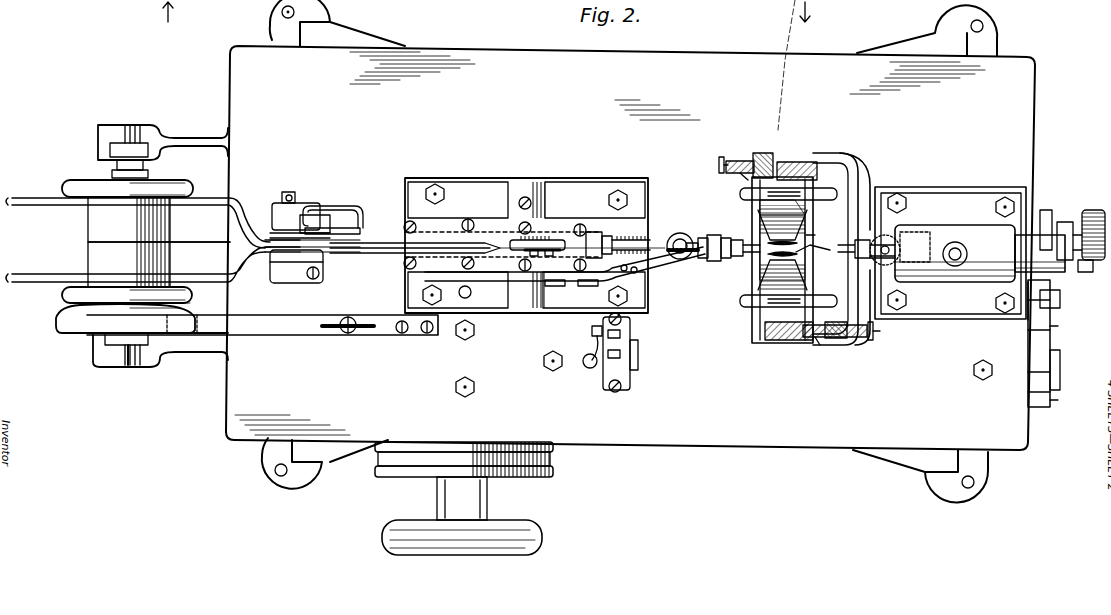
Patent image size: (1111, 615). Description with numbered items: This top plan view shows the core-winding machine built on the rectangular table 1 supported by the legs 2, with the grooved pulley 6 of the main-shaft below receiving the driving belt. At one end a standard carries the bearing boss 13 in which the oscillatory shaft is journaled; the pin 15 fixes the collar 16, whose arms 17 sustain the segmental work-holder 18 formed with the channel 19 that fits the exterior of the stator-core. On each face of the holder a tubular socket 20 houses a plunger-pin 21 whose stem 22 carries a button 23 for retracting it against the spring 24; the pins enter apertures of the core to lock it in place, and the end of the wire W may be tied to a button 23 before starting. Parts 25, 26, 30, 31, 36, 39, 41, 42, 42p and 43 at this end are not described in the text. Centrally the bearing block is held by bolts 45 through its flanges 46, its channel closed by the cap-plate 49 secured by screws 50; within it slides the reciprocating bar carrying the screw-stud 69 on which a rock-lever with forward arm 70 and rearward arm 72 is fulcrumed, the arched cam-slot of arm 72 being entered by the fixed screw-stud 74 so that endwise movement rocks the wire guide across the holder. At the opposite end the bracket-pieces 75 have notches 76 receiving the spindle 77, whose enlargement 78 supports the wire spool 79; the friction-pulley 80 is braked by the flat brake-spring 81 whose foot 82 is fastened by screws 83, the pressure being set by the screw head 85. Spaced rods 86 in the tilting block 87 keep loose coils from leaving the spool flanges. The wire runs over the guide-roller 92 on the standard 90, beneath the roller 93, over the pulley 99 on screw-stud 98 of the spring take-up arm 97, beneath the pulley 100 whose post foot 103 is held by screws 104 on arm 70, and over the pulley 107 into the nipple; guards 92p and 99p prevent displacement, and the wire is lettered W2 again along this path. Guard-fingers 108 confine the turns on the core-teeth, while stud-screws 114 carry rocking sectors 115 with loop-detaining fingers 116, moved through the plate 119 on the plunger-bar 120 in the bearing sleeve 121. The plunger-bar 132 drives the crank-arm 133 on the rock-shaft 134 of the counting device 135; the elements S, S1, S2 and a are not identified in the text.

The table 1 is at (630, 248).
The legs 2 is at (629, 251).
The grooved pulley 6 is at (553, 460).
The bearing boss 13 is at (950, 253).
The pin 15 is at (888, 236).
The collar 16 is at (888, 272).
The arms 17 is at (862, 170).
The segmental work-holder 18 is at (808, 158).
The channel 19 is at (785, 162).
The tubular socket 20 is at (740, 161).
The plunger-pin 21 is at (762, 153).
The stem 22 is at (719, 160).
The button 23 is at (718, 170).
The spring 24 is at (735, 180).
The shaft 25 is at (1040, 253).
The collar 26 is at (1065, 222).
The pin 30 is at (1082, 272).
The knob 31 is at (1103, 202).
The washer 36 is at (1046, 210).
The stud 39 is at (1060, 300).
The plate 41 is at (1028, 320).
The lever arm 42 is at (1039, 343).
The lever arm ends 42p is at (1045, 425).
The stop 43 is at (1060, 365).
The bolts 45 is at (435, 184).
The flanges 46 is at (642, 198).
The cap-plate 49 is at (448, 225).
The screws 50 is at (474, 226).
The screw-stud 69 is at (595, 267).
The forwardly extending arm 70 is at (665, 268).
The rearwardly extending arm 72 is at (488, 272).
The fixed screw-stud 74 is at (555, 291).
The bracket-pieces 75 is at (160, 246).
The notches 76 is at (158, 112).
The spindle 77 is at (128, 365).
The enlargement 78 is at (112, 172).
The spool 79 is at (186, 184).
The friction-pulley 80 is at (58, 324).
The flat brake-spring 81 is at (262, 325).
The foot 82 is at (402, 320).
The screws 83 is at (405, 334).
The head 85 is at (350, 317).
The spaced rods 86 is at (200, 207).
The tilting block 87 is at (286, 277).
The standard 90 is at (332, 228).
The grooved guide-roller 92 is at (338, 252).
The guard 92p is at (352, 208).
The guide-roller 93 is at (265, 242).
The spring take-up arm 97 is at (388, 252).
The screw-stud 98 is at (534, 256).
The grooved guide-pulley 99 is at (550, 256).
The guard 99p is at (558, 240).
The guide-pulley 100 is at (625, 240).
The foot 103 is at (630, 262).
The screws 104 is at (634, 273).
The grooved guide-pulley 107 is at (688, 255).
The guard-finger 108 is at (740, 196).
The lateral stud-screws 114 is at (714, 235).
The rocking sectors 115 is at (703, 238).
The loop-detaining fingers 116 is at (740, 240).
The plate 119 is at (676, 240).
The plunger-bar 120 is at (692, 243).
The vertical bearing sleeve 121 is at (667, 246).
The plunger-bar 132 is at (588, 368).
The crank-arm 133 is at (592, 352).
The rock-shaft 134 is at (593, 322).
The counting device 135 is at (638, 352).
The gear S is at (812, 232).
The gear S1 is at (815, 225).
The gear S2 is at (808, 220).
The bearing a is at (775, 340).
The wire W is at (207, 246).
The wire W2 is at (846, 355).